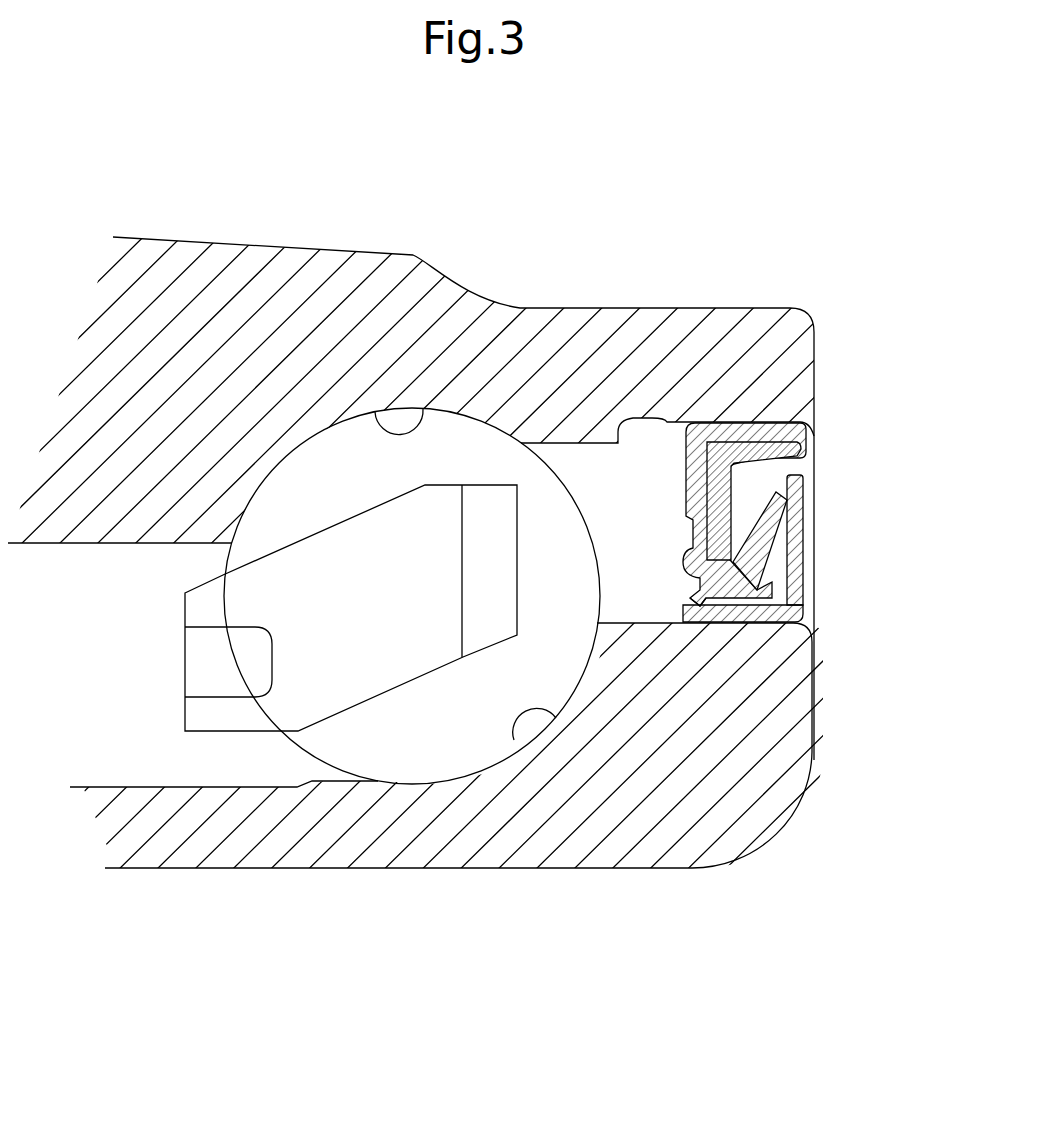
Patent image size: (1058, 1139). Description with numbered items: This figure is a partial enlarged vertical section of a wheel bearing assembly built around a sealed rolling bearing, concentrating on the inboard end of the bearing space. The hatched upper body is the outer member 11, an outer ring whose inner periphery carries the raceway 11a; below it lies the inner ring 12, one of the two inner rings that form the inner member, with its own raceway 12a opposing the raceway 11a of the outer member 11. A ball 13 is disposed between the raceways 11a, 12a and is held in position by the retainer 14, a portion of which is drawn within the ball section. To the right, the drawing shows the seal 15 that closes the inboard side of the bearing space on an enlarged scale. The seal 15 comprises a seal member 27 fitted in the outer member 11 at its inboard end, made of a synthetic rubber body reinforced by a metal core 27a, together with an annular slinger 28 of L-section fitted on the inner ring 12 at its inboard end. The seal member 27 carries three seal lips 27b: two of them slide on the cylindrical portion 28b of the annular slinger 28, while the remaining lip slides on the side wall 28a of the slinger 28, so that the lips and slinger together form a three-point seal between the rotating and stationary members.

The outer member 11 is at (241, 280).
The raceway 11a is at (423, 408).
The inner ring 12 is at (337, 855).
The raceway 12a is at (535, 708).
The ball 13 is at (445, 745).
The retainer 14 is at (237, 717).
The seal 15 is at (757, 577).
The seal member 27 is at (757, 514).
The metal core 27a is at (695, 500).
The seal lip 27b is at (688, 601).
The annular slinger 28 is at (803, 625).
The side wall 28a is at (790, 528).
The cylindrical portion 28b is at (741, 612).